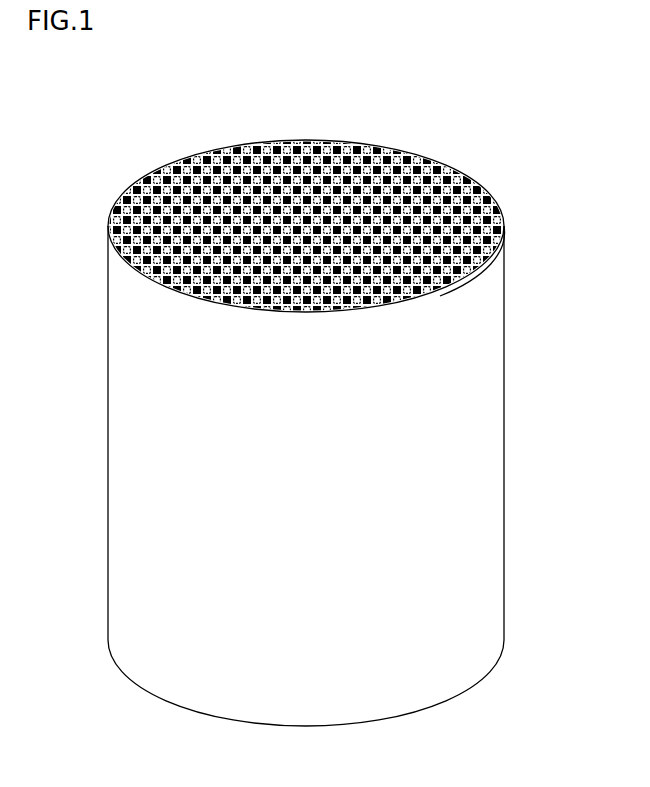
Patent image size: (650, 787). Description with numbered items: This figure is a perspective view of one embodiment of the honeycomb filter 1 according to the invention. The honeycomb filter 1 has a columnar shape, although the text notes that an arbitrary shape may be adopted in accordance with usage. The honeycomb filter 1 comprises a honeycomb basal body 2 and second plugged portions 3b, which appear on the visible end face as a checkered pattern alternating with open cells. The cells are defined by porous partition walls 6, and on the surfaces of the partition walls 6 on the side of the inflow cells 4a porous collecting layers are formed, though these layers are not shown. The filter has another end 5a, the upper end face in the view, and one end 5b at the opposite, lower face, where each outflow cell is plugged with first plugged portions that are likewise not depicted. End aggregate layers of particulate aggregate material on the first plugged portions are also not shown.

The honeycomb filter 1 is at (359, 394).
The honeycomb basal body 2 is at (489, 380).
The second plugged portion 3b is at (361, 148).
The inflow cell 4a is at (419, 170).
The another end 5a is at (517, 230).
The one end 5b is at (511, 663).
The partition wall 6 is at (476, 257).